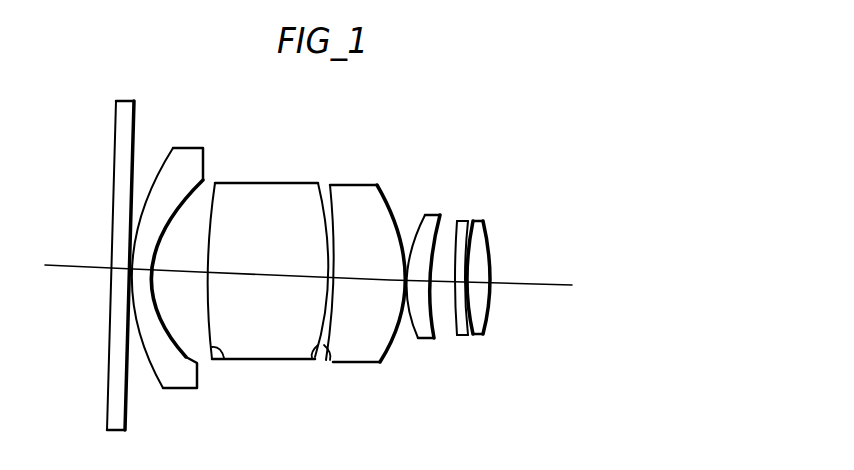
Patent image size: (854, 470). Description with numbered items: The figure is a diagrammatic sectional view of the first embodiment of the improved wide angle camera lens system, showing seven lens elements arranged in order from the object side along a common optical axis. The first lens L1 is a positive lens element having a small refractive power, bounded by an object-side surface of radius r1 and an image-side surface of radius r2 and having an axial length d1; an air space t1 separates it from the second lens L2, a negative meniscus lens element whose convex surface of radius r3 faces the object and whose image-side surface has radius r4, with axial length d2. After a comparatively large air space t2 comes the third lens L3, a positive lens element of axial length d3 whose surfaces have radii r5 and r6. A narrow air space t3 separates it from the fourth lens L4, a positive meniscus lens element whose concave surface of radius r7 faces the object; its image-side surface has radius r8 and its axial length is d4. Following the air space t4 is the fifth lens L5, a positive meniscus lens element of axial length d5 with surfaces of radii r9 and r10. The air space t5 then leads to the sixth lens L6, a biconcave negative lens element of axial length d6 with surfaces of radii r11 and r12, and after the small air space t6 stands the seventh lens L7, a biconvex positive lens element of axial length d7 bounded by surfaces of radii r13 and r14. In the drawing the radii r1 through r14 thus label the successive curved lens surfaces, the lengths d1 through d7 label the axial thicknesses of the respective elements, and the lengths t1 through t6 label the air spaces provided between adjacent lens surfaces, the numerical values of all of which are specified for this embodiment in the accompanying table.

The first lens L1 is at (123, 102).
The second lens L2 is at (187, 155).
The third lens L3 is at (268, 186).
The fourth lens L4 is at (357, 192).
The fifth lens L5 is at (429, 216).
The sixth lens L6 is at (465, 222).
The seventh lens L7 is at (485, 222).
The radius of curvature of first lens surface r1 is at (107, 415).
The radius of curvature of second lens surface r2 is at (127, 413).
The radius of curvature of third lens surface r3 is at (160, 378).
The radius of curvature of fourth lens surface r4 is at (198, 386).
The radius of curvature of fifth lens surface r5 is at (222, 360).
The radius of curvature of sixth lens surface r6 is at (315, 360).
The radius of curvature of seventh lens surface r7 is at (328, 360).
The radius of curvature of eighth lens surface r8 is at (381, 363).
The radius of curvature of ninth lens surface r9 is at (418, 339).
The radius of curvature of tenth lens surface r10 is at (434, 339).
The radius of curvature of eleventh lens surface r11 is at (457, 336).
The radius of curvature of twelfth lens surface r12 is at (470, 338).
The radius of curvature of thirteenth lens surface r13 is at (474, 322).
The radius of curvature of fourteenth lens surface r14 is at (491, 300).
The axial length of first lens d1 is at (117, 258).
The axial length of second lens d2 is at (148, 265).
The axial length of third lens d3 is at (270, 266).
The axial length of fourth lens d4 is at (372, 266).
The axial length of fifth lens d5 is at (405, 250).
The axial length of sixth lens d6 is at (475, 252).
The axial length of seventh lens d7 is at (474, 272).
The air space between first and second lenses t1 is at (130, 272).
The air space between second and third lenses t2 is at (172, 290).
The air space between third and fourth lenses t3 is at (323, 284).
The air space between fourth and fifth lenses t4 is at (402, 284).
The air space between fifth and sixth lenses t5 is at (438, 294).
The air space between sixth and seventh lenses t6 is at (478, 290).